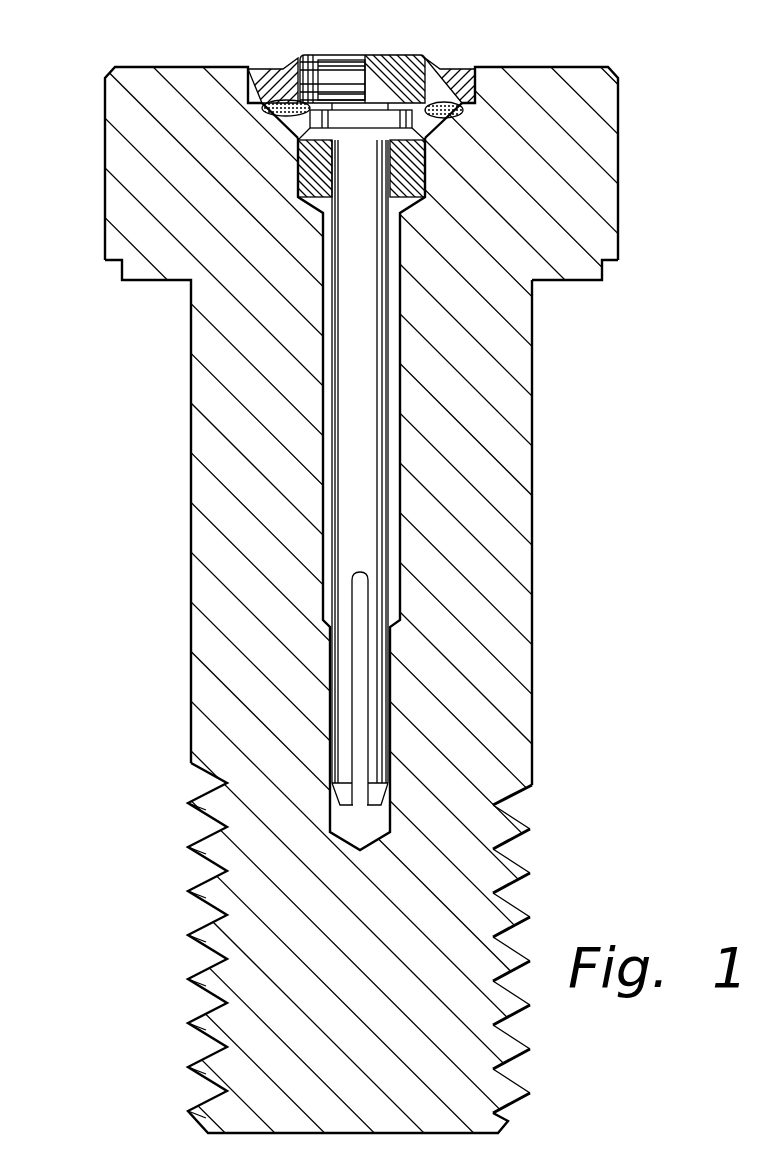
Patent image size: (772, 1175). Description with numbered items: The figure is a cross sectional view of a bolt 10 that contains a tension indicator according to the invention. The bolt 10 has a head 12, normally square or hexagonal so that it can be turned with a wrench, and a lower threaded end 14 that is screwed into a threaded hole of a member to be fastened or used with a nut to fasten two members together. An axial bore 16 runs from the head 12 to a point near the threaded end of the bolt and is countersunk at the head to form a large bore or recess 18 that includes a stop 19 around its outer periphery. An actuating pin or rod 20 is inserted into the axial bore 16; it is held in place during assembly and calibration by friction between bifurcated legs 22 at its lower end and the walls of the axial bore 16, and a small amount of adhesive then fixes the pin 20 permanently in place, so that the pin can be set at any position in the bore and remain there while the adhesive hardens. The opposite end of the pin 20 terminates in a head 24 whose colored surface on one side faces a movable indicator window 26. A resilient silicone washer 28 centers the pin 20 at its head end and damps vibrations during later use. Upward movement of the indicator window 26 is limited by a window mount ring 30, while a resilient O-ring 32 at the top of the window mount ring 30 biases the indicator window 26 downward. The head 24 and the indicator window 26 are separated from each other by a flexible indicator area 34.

The bolt 10 is at (189, 553).
The head 12 is at (105, 190).
The lower threaded end 14 is at (191, 797).
The axial bore 16 is at (323, 372).
The large bore or recess 18 is at (430, 150).
The stop 19 is at (252, 107).
The actuating pin or rod 20 is at (368, 535).
The bifurcated legs 22 is at (390, 803).
The head 24 is at (310, 128).
The movable indicator window 26 is at (345, 78).
The resilient silicone washer 28 is at (534, 298).
The window mount ring 30 is at (445, 60).
The resilient O-ring 32 is at (300, 60).
The flexible indicator area 34 is at (435, 127).